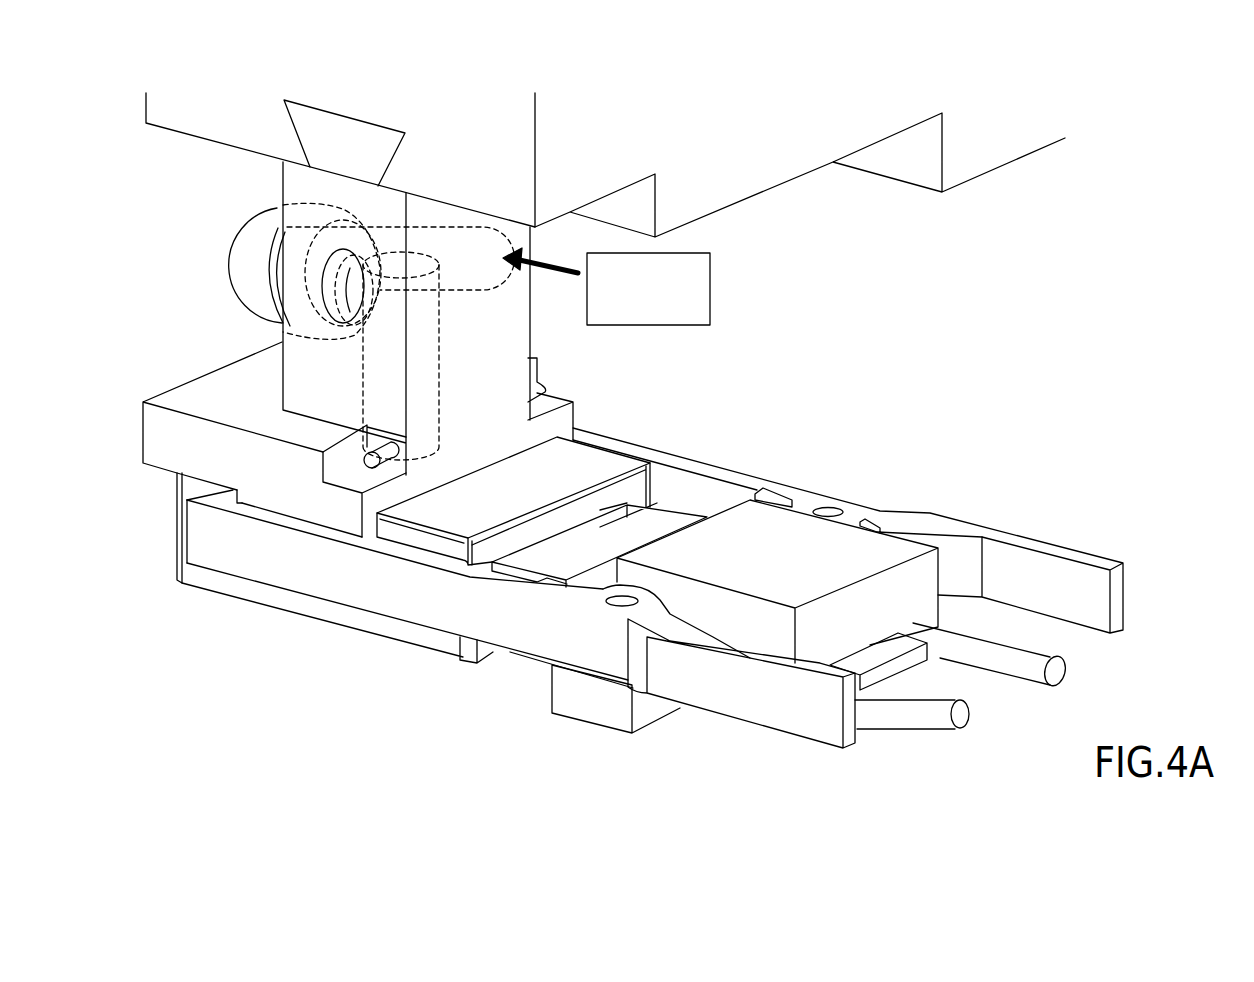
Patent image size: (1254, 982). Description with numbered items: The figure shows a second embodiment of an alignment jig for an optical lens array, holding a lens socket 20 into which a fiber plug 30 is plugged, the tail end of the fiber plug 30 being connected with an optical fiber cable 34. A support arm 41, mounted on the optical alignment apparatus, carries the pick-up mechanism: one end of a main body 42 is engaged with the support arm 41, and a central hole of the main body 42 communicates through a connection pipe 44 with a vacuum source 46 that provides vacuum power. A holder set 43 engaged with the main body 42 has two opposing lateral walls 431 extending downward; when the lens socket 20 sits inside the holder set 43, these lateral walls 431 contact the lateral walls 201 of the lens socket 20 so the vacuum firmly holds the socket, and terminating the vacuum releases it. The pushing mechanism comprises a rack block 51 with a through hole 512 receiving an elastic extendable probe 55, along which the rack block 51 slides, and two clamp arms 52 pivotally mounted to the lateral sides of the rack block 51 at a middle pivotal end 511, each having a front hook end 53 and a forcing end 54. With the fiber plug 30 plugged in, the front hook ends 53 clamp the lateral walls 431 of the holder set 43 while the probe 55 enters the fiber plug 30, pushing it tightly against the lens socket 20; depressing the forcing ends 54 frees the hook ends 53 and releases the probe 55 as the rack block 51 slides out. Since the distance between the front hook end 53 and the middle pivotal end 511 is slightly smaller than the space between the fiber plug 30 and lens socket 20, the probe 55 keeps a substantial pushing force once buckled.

The lens socket 20 is at (207, 588).
The lateral walls of the lens socket 201 is at (287, 595).
The fiber plug 30 is at (665, 520).
The optical fiber cable 34 is at (893, 652).
The support arm 41 is at (212, 137).
The main body 42 is at (295, 365).
The holder set 43 is at (193, 435).
The lateral walls of the holder set 431 is at (293, 512).
The connection pipe 44 is at (240, 246).
The vacuum source 46 is at (703, 273).
The rack block 51 is at (787, 537).
The middle pivotal end 511 is at (622, 602).
The through hole 512 is at (912, 623).
The clamp arm 52 is at (468, 620).
The front hook end 53 is at (222, 498).
The forcing end 54 is at (725, 700).
The elastic extendable probe 55 is at (918, 703).